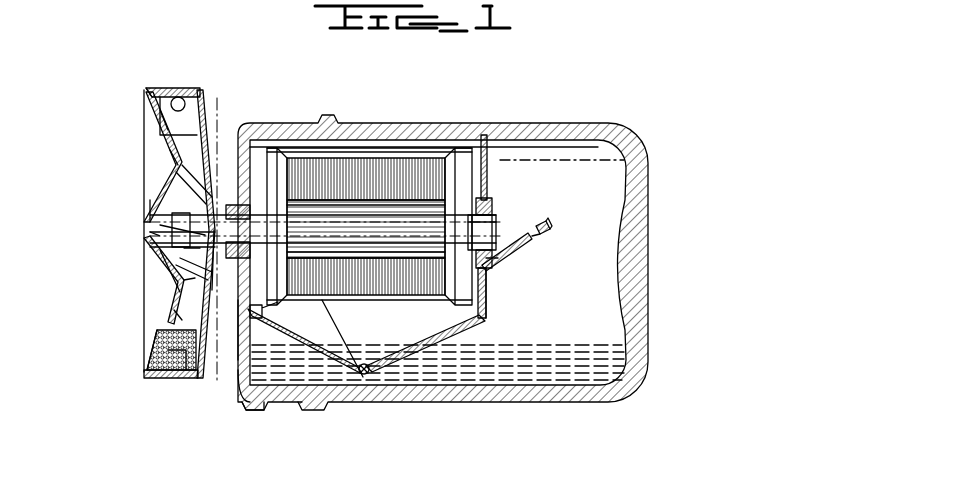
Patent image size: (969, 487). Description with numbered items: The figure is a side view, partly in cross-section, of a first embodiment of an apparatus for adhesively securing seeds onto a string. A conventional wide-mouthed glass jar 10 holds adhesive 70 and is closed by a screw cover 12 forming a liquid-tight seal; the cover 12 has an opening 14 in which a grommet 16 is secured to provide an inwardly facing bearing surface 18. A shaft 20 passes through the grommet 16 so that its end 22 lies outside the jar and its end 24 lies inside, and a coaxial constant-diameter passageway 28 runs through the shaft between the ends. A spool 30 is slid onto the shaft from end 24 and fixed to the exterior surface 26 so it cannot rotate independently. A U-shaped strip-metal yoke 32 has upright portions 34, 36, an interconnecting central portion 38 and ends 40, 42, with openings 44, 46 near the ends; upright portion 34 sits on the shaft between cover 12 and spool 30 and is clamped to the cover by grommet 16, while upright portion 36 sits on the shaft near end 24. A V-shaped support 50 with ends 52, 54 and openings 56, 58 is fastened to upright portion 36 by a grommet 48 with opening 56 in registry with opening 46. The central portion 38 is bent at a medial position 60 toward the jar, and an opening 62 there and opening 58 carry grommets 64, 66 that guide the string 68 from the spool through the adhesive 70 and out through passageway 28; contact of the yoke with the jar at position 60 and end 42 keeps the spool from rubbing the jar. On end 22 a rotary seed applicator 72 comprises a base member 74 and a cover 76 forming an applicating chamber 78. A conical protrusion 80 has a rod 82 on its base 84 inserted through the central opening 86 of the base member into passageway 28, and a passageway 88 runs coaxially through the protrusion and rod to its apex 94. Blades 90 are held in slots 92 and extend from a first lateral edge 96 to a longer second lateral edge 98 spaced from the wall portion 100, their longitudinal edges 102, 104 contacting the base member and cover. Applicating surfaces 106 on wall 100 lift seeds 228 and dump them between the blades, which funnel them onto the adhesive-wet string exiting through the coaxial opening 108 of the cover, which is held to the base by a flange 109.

The wide-mouthed glass jar 10 is at (503, 125).
The screw cover 12 is at (272, 409).
The opening 14 is at (236, 350).
The grommet 16 is at (232, 213).
The bearing surface 18 is at (258, 218).
The shaft 20 is at (328, 216).
The shaft end 22 is at (213, 290).
The shaft end 24 is at (497, 240).
The exterior surface 26 is at (376, 240).
The passageway 28 is at (372, 232).
The spool 30 is at (427, 302).
The yoke 32 is at (472, 330).
The upright portion 34 is at (264, 310).
The upright portion 36 is at (487, 300).
The central portion 38 is at (295, 335).
The yoke end 40 is at (244, 205).
The yoke end 42 is at (484, 198).
The opening 44 is at (240, 388).
The opening 46 is at (493, 222).
The grommet 48 is at (493, 266).
The support 50 is at (538, 301).
The support end 52 is at (490, 214).
The support end 54 is at (547, 226).
The opening 56 is at (498, 258).
The opening 58 is at (536, 240).
The medial position 60 is at (361, 376).
The opening 62 is at (363, 364).
The grommet 64 is at (376, 360).
The grommet 66 is at (549, 231).
The string 68 is at (332, 312).
The adhesive 70 is at (522, 348).
The rotary seed applicator 72 is at (150, 88).
The base member 74 is at (207, 130).
The cover 76 is at (170, 137).
The applicating chamber 78 is at (180, 292).
The conical protrusion 80 is at (175, 165).
The rod 82 is at (219, 100).
The base 84 is at (200, 186).
The central opening 86 is at (200, 248).
The passageway 88 is at (195, 230).
The blades 90 is at (180, 318).
The slots 92 is at (160, 236).
The apex 94 is at (205, 235).
The first lateral edge 96 is at (215, 236).
The second lateral edge 98 is at (148, 95).
The wall portion 100 is at (176, 92).
The longitudinal edge 102 is at (190, 262).
The longitudinal edge 104 is at (195, 278).
The applicating surfaces 106 is at (152, 372).
The coaxial opening 108 is at (215, 247).
The flange 109 is at (172, 380).
The seeds 228 is at (178, 340).